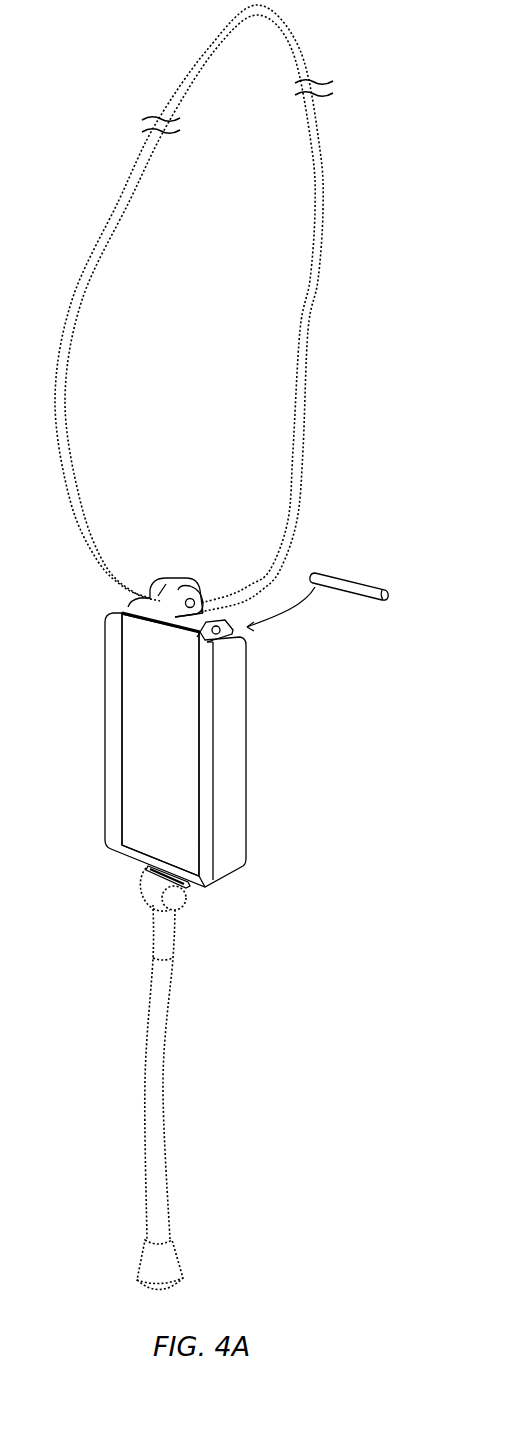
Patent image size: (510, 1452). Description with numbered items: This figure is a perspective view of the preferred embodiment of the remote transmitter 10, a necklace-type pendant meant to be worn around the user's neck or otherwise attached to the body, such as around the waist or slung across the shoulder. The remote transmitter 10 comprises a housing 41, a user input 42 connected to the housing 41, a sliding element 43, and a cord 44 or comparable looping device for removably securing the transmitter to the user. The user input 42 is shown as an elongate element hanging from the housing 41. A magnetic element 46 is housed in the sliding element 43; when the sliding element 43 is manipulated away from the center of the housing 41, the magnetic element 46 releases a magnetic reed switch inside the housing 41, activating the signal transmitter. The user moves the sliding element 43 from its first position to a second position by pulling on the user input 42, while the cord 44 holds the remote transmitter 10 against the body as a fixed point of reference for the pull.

The remote transmitter 10 is at (318, 697).
The housing 41 is at (247, 782).
The user input 42 is at (179, 1083).
The sliding element 43 is at (127, 672).
The cord 44 is at (310, 333).
The magnetic element 46 is at (347, 580).